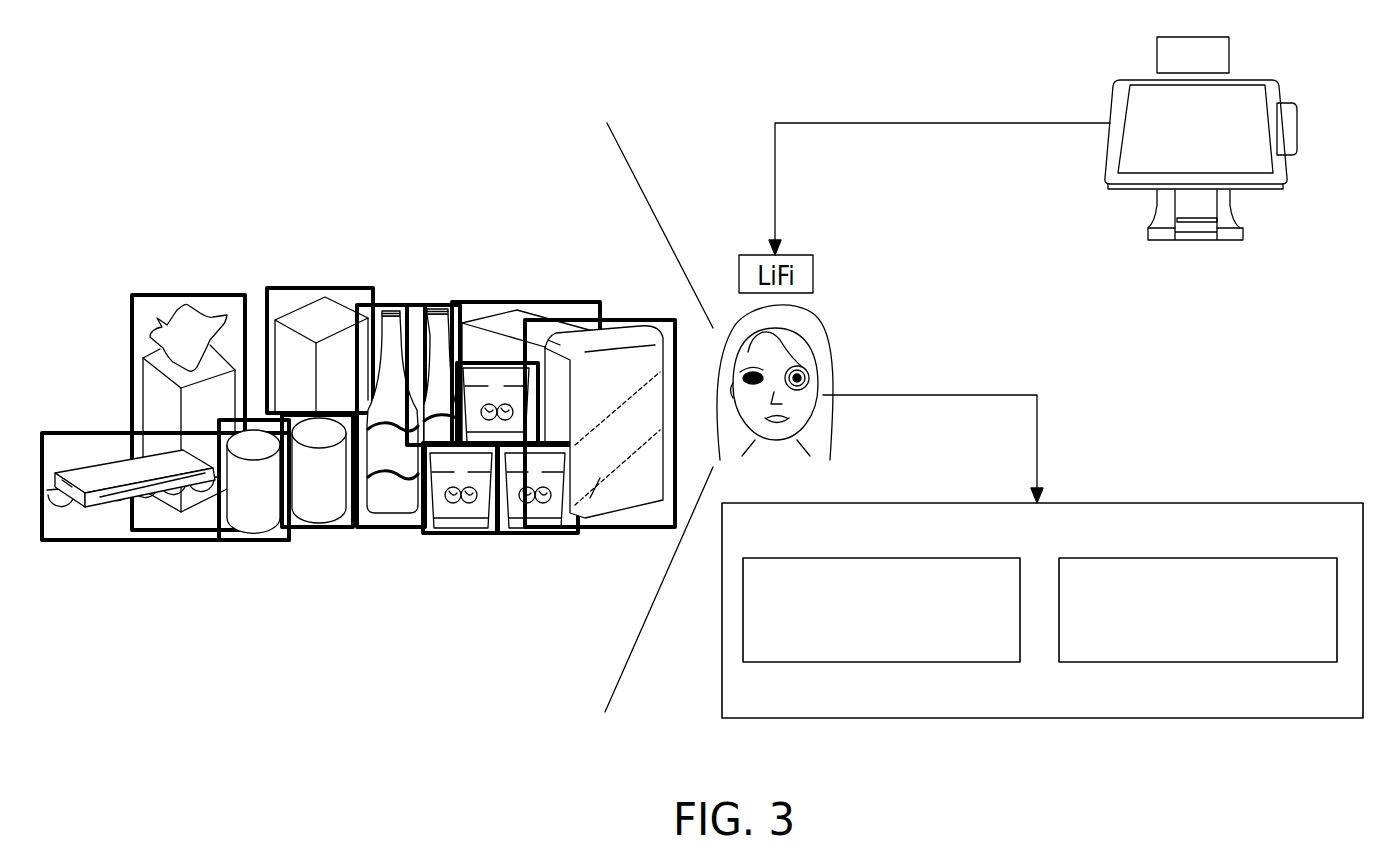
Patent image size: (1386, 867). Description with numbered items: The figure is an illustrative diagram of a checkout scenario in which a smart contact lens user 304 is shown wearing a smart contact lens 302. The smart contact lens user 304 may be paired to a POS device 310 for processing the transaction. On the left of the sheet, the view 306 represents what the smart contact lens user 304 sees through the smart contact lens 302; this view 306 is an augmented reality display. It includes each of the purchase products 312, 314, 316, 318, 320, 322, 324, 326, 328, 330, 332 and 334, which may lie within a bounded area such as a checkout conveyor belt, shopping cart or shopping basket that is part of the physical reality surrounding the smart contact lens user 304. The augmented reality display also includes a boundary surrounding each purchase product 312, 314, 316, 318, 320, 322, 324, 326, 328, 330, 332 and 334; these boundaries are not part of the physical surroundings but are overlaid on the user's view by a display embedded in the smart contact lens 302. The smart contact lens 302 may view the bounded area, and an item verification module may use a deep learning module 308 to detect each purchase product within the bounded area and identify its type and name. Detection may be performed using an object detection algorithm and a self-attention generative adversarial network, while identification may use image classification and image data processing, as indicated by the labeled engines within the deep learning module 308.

The smart contact lens 302 is at (815, 386).
The smart contact lens user 304 is at (833, 338).
The view 306 is at (358, 188).
The deep learning module 308 is at (1180, 503).
The POS device 310 is at (1115, 102).
The purchase product 312 is at (95, 462).
The purchase product 314 is at (187, 303).
The purchase product 316 is at (303, 305).
The purchase product 318 is at (395, 310).
The purchase product 320 is at (435, 310).
The purchase product 322 is at (523, 310).
The purchase product 324 is at (622, 327).
The purchase product 326 is at (260, 528).
The purchase product 328 is at (310, 518).
The purchase product 330 is at (465, 532).
The purchase product 332 is at (518, 532).
The purchase product 334 is at (480, 377).